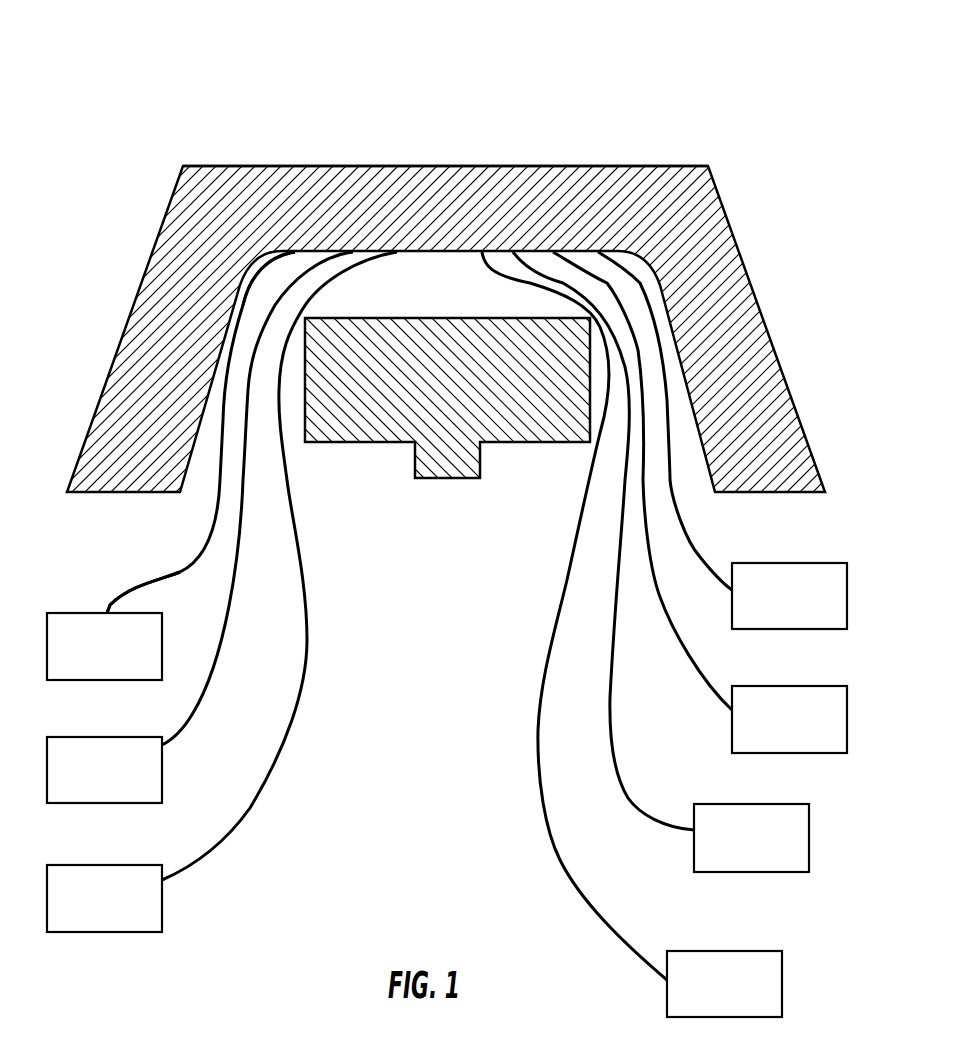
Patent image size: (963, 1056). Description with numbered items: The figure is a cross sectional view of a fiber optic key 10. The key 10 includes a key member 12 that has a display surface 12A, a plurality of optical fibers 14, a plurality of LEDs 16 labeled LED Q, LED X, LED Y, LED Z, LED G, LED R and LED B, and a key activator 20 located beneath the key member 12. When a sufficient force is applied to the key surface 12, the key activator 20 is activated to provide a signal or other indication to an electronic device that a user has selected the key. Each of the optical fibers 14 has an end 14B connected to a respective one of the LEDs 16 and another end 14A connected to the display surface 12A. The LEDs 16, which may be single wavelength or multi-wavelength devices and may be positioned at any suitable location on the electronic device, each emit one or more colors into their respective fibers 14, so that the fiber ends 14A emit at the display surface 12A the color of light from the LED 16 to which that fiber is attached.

The fiber optic key 10 is at (518, 74).
The key member 12 is at (323, 181).
The display surface 12A is at (497, 152).
The optical fibers 14 is at (181, 568).
The fiber end connected to display surface 14A is at (293, 250).
The fiber end connected to LED 14B is at (107, 612).
The LEDs 16 is at (70, 681).
The key activator 20 is at (398, 424).